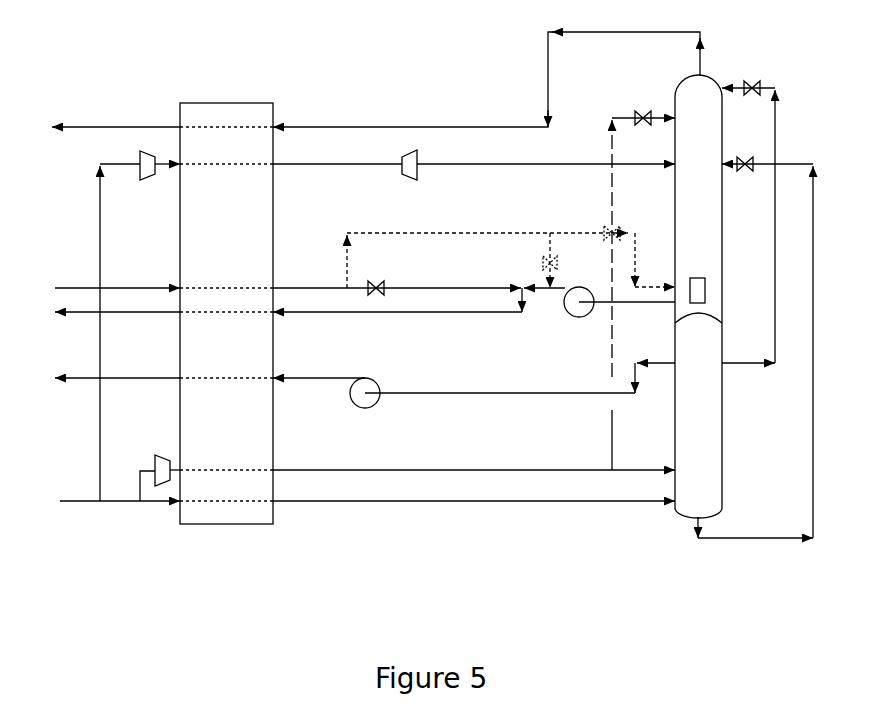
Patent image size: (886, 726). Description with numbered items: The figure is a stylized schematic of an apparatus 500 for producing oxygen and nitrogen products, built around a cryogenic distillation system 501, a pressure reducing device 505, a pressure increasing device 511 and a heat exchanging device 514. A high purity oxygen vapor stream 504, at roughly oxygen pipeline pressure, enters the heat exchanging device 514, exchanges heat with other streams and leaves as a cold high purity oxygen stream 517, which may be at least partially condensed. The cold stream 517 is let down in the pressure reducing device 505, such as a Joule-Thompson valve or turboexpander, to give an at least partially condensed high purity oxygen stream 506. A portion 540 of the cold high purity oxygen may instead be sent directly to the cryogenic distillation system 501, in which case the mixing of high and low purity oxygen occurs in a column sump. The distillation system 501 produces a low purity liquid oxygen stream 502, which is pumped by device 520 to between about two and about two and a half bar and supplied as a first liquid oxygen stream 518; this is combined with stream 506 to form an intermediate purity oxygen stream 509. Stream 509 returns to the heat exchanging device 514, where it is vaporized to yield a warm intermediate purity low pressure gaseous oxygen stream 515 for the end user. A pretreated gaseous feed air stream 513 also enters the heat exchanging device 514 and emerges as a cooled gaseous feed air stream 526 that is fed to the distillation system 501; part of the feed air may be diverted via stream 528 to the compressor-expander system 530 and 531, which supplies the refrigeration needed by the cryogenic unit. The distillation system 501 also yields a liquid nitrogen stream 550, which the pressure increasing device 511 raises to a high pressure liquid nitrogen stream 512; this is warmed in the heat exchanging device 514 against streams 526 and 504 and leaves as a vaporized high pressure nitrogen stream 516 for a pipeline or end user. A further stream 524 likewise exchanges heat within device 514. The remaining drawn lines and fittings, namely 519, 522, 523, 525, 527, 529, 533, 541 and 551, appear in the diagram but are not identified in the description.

The apparatus 500 is at (85, 88).
The cryogenic distillation system 501 is at (723, 412).
The low purity liquid oxygen stream 502 is at (627, 293).
The high purity oxygen vapor stream 504 is at (271, 285).
The pressure reducing device 505 is at (376, 277).
The at least partially condensed high purity oxygen stream 506 is at (426, 269).
The intermediate purity oxygen stream 509 is at (397, 324).
The pressure increasing device 511 is at (365, 407).
The high pressure liquid nitrogen stream 512 is at (319, 369).
The gaseous feed air stream 513 is at (106, 500).
The heat exchanging device 514 is at (226, 327).
The warm intermediate purity low pressure gaseous oxygen stream 515 is at (97, 312).
The vaporized high pressure nitrogen stream 516 is at (101, 379).
The cold high purity oxygen stream 517 is at (325, 268).
The first liquid oxygen stream 518 is at (530, 284).
The bottoms stream 519 is at (612, 378).
The pump device 520 is at (582, 311).
The bottoms product stream 522 is at (755, 527).
The recycle line 523 is at (767, 309).
The stream 524 is at (486, 79).
The overhead product stream 525 is at (101, 127).
The cooled gaseous feed air stream 526 is at (123, 521).
The feed stream 527 is at (474, 491).
The feed air portion stream 528 is at (134, 486).
The compressed vapor stream 529 is at (546, 155).
The compressor-expander 530 is at (146, 162).
The compressor-expander 531 is at (409, 161).
The vapor stream 533 is at (337, 155).
The portion of high purity oxygen stream 540 is at (511, 290).
The control valve 541 is at (548, 244).
The liquid nitrogen stream 550 is at (133, 448).
The stream 551 is at (422, 460).